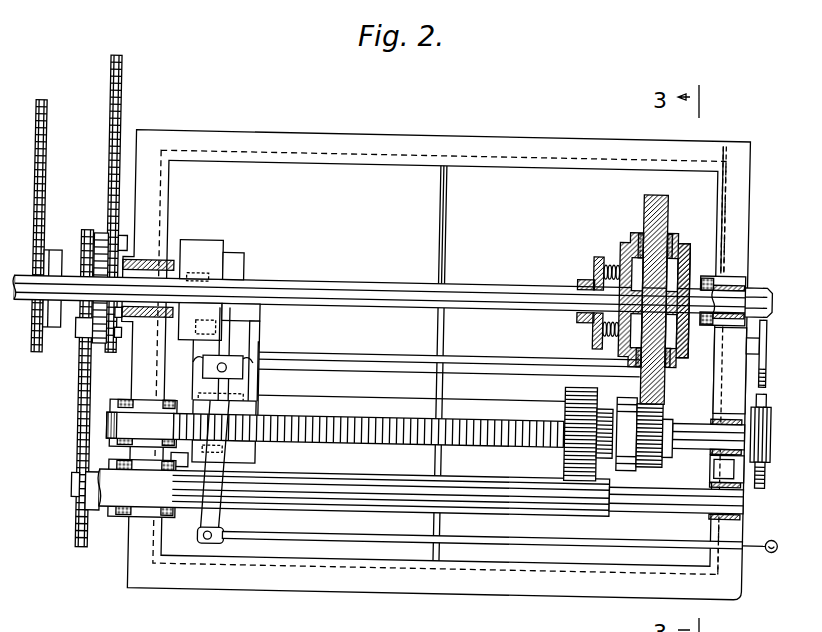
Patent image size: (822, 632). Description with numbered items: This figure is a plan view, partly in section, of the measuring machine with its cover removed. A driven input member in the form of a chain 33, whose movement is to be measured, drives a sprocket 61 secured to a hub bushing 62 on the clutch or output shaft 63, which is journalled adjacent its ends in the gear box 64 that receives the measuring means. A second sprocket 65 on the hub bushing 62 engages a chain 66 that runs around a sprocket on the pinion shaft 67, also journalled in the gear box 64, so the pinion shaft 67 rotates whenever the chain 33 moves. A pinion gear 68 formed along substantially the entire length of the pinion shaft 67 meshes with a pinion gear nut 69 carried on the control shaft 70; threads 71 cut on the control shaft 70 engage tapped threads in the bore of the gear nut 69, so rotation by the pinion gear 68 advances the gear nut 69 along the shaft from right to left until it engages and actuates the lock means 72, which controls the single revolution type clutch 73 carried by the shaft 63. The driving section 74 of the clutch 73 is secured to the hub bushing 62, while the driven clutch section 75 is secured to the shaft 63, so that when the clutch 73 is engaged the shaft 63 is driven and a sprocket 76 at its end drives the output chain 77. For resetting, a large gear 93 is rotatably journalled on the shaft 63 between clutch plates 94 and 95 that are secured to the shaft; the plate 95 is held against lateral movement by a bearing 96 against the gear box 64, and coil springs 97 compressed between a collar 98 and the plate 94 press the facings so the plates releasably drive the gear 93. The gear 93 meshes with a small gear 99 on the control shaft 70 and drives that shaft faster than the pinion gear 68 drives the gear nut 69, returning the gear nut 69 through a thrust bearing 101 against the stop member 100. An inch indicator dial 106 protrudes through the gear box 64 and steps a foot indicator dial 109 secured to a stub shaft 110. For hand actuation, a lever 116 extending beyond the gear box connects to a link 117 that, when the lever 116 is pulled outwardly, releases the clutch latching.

The chain 33 is at (116, 112).
The sprocket 61 is at (120, 244).
The hub bushing 62 is at (100, 351).
The clutch or output shaft 63 is at (356, 284).
The gear box 64 is at (298, 134).
The sprocket 65 is at (78, 341).
The chain 66 is at (80, 419).
The pinion shaft 67 is at (663, 505).
The pinion gear 68 is at (556, 509).
The pinion gear nut 69 is at (566, 389).
The control shaft 70 is at (686, 419).
The threads 71 is at (369, 415).
The lock means 72 is at (274, 347).
The single revolution type clutch 73 is at (240, 243).
The driving section 74 is at (170, 263).
The driven clutch section 75 is at (197, 244).
The sprocket 76 is at (55, 255).
The chain 77 is at (49, 175).
The gear 93 is at (638, 207).
The clutch plate 94 is at (619, 238).
The clutch plate 95 is at (681, 237).
The bearing 96 is at (710, 272).
The coil springs 97 is at (603, 258).
The collar 98 is at (583, 277).
The gear 99 is at (662, 460).
The stop member 100 is at (609, 401).
The thrust bearing 101 is at (625, 397).
The inch indicator dial 106 is at (771, 387).
The foot indicator dial 109 is at (772, 319).
The stub shaft 110 is at (754, 350).
The lever 116 is at (764, 545).
The link 117 is at (231, 518).